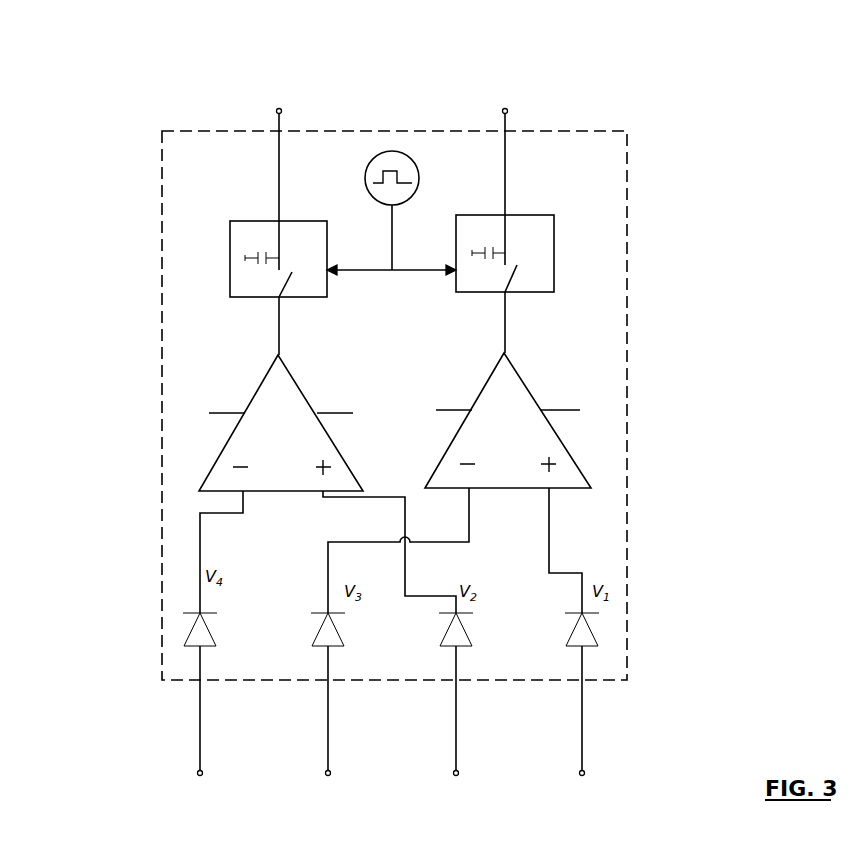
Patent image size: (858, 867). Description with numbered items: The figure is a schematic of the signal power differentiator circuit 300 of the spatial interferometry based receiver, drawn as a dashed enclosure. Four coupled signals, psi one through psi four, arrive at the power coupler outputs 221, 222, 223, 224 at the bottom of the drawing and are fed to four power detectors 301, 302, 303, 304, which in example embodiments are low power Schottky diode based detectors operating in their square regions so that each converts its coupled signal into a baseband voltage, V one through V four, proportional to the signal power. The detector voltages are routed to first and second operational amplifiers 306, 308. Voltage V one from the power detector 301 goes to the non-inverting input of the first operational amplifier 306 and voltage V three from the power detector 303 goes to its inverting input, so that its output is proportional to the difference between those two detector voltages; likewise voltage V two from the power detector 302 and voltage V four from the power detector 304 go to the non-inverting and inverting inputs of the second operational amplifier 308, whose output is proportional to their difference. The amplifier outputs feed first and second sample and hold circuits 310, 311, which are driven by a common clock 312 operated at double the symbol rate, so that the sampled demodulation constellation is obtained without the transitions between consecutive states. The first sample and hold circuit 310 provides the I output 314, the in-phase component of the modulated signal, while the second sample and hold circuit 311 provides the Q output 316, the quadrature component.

The power differentiator circuit 300 is at (627, 350).
The power detector 301 is at (597, 642).
The power detector 302 is at (477, 650).
The power detector 303 is at (338, 648).
The power detector 304 is at (183, 646).
The first operational amplifier 306 is at (573, 458).
The second operational amplifier 308 is at (212, 457).
The first sample and hold circuit 310 is at (554, 258).
The second sample and hold circuit 311 is at (230, 258).
The clock 312 is at (388, 152).
The I output 314 is at (505, 111).
The Q output 316 is at (279, 111).
The power coupler output 221 is at (582, 773).
The power coupler output 222 is at (456, 773).
The power coupler output 223 is at (328, 773).
The power coupler output 224 is at (200, 773).